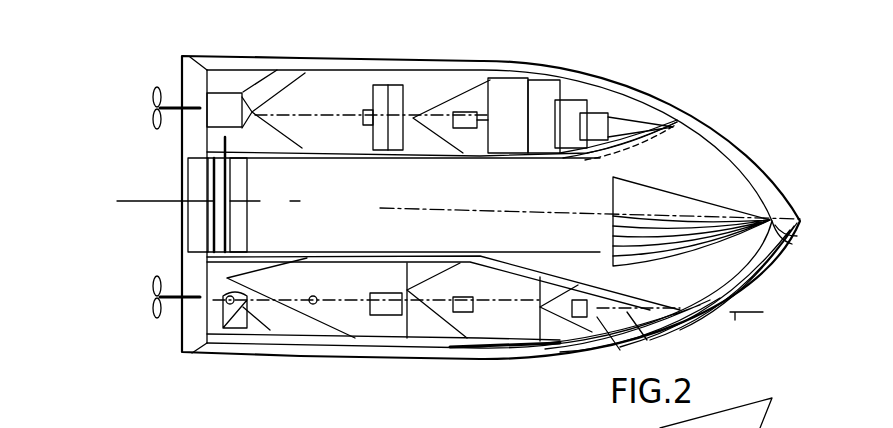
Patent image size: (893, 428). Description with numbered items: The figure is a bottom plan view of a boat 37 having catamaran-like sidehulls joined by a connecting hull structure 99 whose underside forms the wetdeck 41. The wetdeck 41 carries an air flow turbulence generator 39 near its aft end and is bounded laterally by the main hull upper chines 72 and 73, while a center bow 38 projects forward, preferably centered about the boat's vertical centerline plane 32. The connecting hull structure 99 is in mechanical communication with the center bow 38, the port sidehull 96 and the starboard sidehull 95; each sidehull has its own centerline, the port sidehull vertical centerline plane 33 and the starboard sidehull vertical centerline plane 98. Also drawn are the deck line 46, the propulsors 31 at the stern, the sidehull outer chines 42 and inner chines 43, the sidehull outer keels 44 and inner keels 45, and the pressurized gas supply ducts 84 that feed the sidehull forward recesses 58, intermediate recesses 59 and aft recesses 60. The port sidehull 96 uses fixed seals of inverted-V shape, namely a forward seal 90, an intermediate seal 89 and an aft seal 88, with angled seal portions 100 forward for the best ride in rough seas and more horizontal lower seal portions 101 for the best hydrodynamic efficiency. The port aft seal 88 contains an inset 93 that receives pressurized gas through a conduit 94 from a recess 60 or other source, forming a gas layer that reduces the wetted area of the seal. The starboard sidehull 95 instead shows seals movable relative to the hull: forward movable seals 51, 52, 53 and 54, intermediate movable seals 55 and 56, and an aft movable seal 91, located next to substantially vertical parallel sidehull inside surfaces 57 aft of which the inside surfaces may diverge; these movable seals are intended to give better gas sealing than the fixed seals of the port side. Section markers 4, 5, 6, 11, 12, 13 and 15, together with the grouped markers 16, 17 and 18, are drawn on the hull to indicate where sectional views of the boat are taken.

The propulsion unit 16 is at (220, 83).
The propulsion unit 17 is at (291, 205).
The propulsion unit 18 is at (219, 194).
The propulsors 31 is at (172, 104).
The vertical centerline plane 32 is at (505, 210).
The port sidehull vertical centerline plane 33 is at (743, 330).
The boat 37 is at (668, 97).
The center bow 38 is at (660, 208).
The air flow turbulence generator 39 is at (253, 226).
The wetdeck 41 is at (443, 233).
The sidehull outer chines 42 is at (347, 348).
The sidehull inner chines 43 is at (460, 257).
The sidehull outer keels 44 is at (620, 347).
The sidehull inner keels 45 is at (365, 260).
The deck line 46 is at (598, 112).
The forward movable seal 51 is at (583, 160).
The forward movable seal 52 is at (571, 113).
The forward movable seal 53 is at (509, 143).
The forward movable seal 54 is at (520, 112).
The intermediate movable seal 55 is at (407, 100).
The intermediate movable seal 56 is at (380, 85).
The parallel sidehull inside surfaces 57 is at (625, 108).
The sidehull forward recesses 58 is at (617, 147).
The intermediate recesses 59 is at (453, 131).
The aft recesses 60 is at (325, 103).
The main hull upper chine 72 is at (707, 292).
The main hull upper chine 73 is at (715, 178).
The pressurized gas supply ducts 84 is at (363, 117).
The aft seal 88 is at (272, 85).
The intermediate seal 89 is at (437, 336).
The forward seal 90 is at (548, 340).
The aft movable seal 91 is at (234, 120).
The inset 93 is at (245, 318).
The conduit 94 is at (222, 314).
The starboard sidehull 95 is at (633, 108).
The port sidehull 96 is at (665, 337).
The starboard sidehull vertical centerline plane 98 is at (737, 124).
The connecting hull structure 99 is at (531, 235).
The angled seal portions 100 is at (545, 290).
The lower seal portions 101 is at (210, 350).
The section line 4- 4 is at (117, 176).
The section line 5- 5 is at (182, 297).
The section line 6- 6 is at (182, 108).
The section line 11- 11 is at (415, 52).
The section line 12- 12 is at (573, 45).
The section line 13- 13 is at (463, 135).
The section line 15- 15 is at (412, 140).